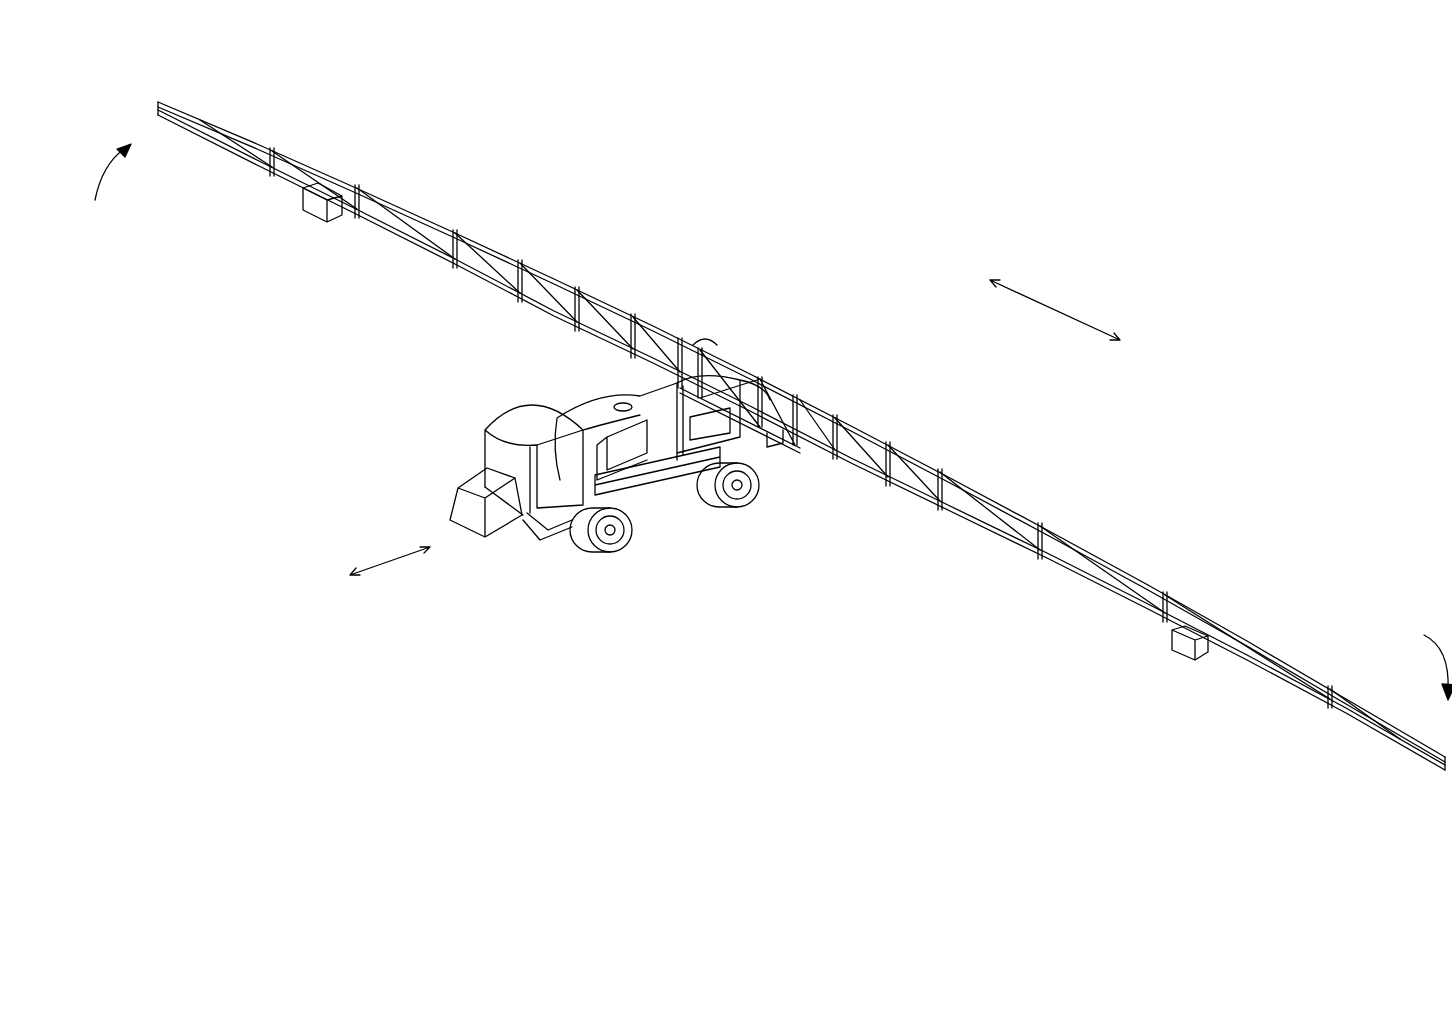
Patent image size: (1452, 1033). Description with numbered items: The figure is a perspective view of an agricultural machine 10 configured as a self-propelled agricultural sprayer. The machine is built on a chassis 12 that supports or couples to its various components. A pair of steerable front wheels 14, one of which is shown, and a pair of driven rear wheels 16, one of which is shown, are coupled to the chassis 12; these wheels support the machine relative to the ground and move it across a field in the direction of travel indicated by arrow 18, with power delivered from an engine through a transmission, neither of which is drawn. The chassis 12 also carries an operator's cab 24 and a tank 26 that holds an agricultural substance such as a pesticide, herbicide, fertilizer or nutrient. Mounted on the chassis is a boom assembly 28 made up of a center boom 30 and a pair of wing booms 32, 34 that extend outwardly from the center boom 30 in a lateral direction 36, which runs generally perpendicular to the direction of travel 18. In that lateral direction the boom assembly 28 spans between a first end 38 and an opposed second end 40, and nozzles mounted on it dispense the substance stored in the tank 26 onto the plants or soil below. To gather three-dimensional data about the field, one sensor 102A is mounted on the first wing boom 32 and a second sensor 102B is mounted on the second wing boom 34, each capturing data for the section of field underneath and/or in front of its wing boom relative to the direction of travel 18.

The agricultural machine 10 is at (256, 102).
The chassis 12 is at (655, 505).
The steerable front wheels 14 is at (600, 556).
The driven rear wheels 16 is at (750, 508).
The direction of travel 18 is at (410, 566).
The operator's cab 24 is at (510, 428).
The tank 26 is at (590, 413).
The boom assembly 28 is at (858, 390).
The center boom 30 is at (756, 356).
The first wing boom 32 is at (1130, 576).
The second wing boom 34 is at (346, 186).
The lateral direction 36 is at (1056, 300).
The first end 38 is at (1423, 659).
The second end 40 is at (105, 195).
The sensor 102A is at (1186, 661).
The second sensor 102B is at (318, 226).